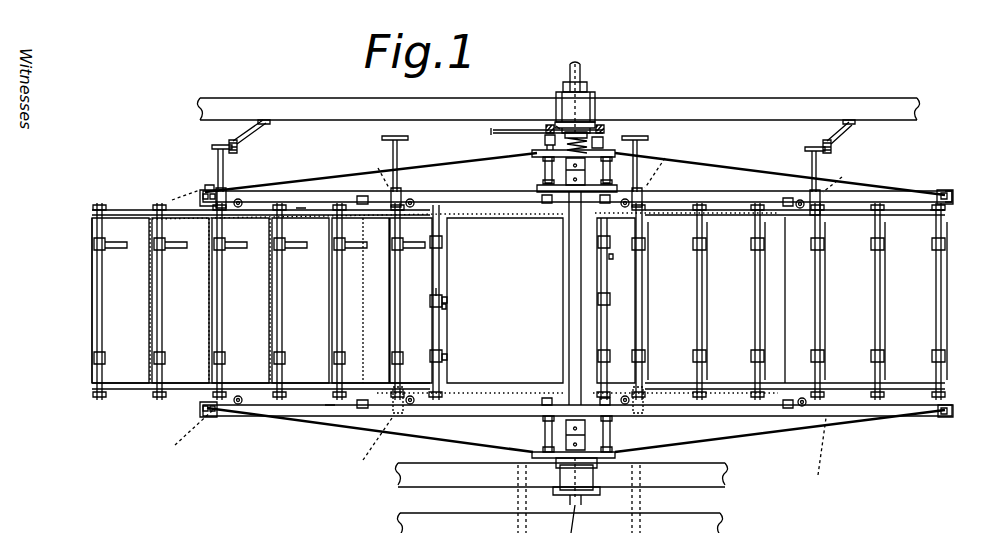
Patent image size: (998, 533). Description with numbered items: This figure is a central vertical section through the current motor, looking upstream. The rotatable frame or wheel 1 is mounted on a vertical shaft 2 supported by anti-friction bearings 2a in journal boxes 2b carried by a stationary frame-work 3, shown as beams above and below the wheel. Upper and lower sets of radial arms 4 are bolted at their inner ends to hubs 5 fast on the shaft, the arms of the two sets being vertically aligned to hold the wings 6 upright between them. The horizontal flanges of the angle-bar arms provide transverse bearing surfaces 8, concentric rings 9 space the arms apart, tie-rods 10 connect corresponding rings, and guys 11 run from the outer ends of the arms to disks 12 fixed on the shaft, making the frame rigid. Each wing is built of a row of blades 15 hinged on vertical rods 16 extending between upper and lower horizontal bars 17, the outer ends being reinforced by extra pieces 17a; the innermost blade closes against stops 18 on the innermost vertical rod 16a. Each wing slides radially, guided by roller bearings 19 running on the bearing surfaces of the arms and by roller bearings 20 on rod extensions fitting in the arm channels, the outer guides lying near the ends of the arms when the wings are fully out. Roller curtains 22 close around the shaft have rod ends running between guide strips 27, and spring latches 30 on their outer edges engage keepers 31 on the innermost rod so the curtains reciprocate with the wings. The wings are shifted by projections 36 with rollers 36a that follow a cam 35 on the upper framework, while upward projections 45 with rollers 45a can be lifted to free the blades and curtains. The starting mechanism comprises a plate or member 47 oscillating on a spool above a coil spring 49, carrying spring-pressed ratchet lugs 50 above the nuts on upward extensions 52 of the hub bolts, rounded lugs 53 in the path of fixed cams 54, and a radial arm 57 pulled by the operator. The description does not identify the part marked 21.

The rotatable frame or wheel 1 is at (953, 197).
The shaft 2 is at (583, 70).
The anti-friction bearings 2a is at (565, 85).
The journal boxes 2b is at (593, 112).
The frame-work 3 is at (728, 108).
The radial arms 4 is at (466, 176).
The hubs 5 is at (566, 426).
The wings 6 is at (105, 322).
The transverse bearing surfaces 8 is at (296, 208).
The concentric rings 9 is at (200, 200).
The tie-rods 10 is at (945, 212).
The guys 11 is at (575, 299).
The disks 12 is at (535, 156).
The blades 15 is at (958, 320).
The vertical rods 16 is at (97, 286).
The innermost vertical rod 16a is at (441, 262).
The horizontal bars 17 is at (262, 210).
The extra pieces 17a is at (113, 209).
The stops 18 is at (444, 246).
The roller bearings 19 is at (238, 198).
The roller bearings 20 is at (507, 313).
The hook 21 is at (435, 291).
The roller curtains 22 is at (613, 291).
The guide strips 27 is at (515, 214).
The spring latches 30 is at (446, 312).
The keepers 31 is at (636, 258).
The cam 35 is at (231, 143).
The projections 36 is at (216, 173).
The rollers 36a is at (213, 147).
The upward projections 45 is at (397, 148).
The rollers 45a is at (516, 129).
The plate or member 47 is at (558, 128).
The coil spring 49 is at (603, 143).
The spring-pressed ratchet lugs 50 is at (545, 142).
The upward extensions 52 is at (545, 172).
The rounded lugs 53 is at (547, 128).
The fixed cams 54 is at (556, 121).
The arm 57 is at (493, 132).